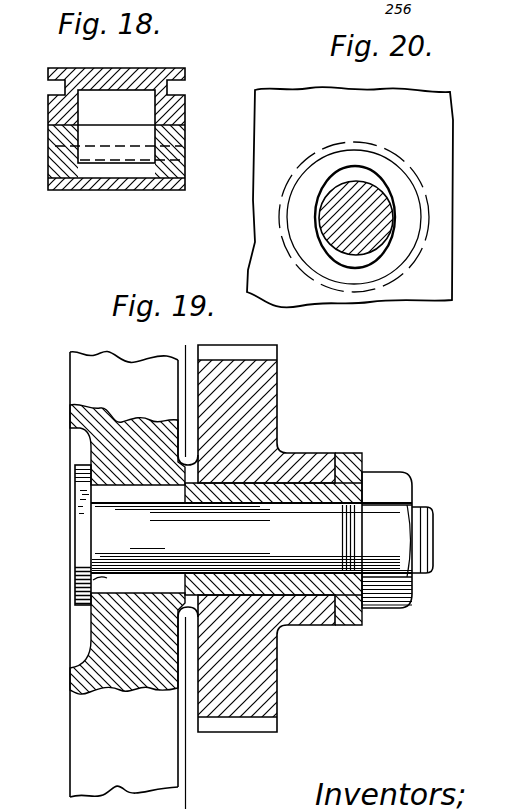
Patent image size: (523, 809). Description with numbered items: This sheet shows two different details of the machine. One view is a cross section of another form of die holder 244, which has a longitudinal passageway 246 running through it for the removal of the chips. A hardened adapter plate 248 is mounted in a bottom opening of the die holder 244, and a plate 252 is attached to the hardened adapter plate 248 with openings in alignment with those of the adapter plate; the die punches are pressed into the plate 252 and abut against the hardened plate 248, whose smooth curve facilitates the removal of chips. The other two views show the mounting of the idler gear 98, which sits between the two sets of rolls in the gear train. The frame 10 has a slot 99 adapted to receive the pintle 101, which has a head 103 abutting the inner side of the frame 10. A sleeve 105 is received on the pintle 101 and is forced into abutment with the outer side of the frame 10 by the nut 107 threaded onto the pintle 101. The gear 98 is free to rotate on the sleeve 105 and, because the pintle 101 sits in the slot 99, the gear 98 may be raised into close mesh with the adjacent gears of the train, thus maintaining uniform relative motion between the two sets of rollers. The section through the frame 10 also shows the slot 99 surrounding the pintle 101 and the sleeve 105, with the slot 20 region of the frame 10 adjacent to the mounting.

In FIG. 18, the die holder 244 is at (137, 68).
In FIG. 18, the longitudinal passageway 246 is at (128, 103).
In FIG. 18, the hardened adapter plate 248 is at (185, 165).
In FIG. 18, the plate 252 is at (167, 191).
In FIG. 20, the frame 10 is at (428, 297).
In FIG. 19, the frame 10 is at (76, 748).
In FIG. 19, the slot 20 is at (184, 347).
In FIG. 19, the idler gear 98 is at (265, 703).
In FIG. 20, the slot 99 is at (370, 268).
In FIG. 19, the slot 99 is at (88, 593).
In FIG. 20, the pintle 101 is at (380, 224).
In FIG. 19, the pintle 101 is at (262, 538).
In FIG. 19, the head 103 is at (83, 523).
In FIG. 19, the sleeve 105 is at (283, 585).
In FIG. 19, the nut 107 is at (388, 596).